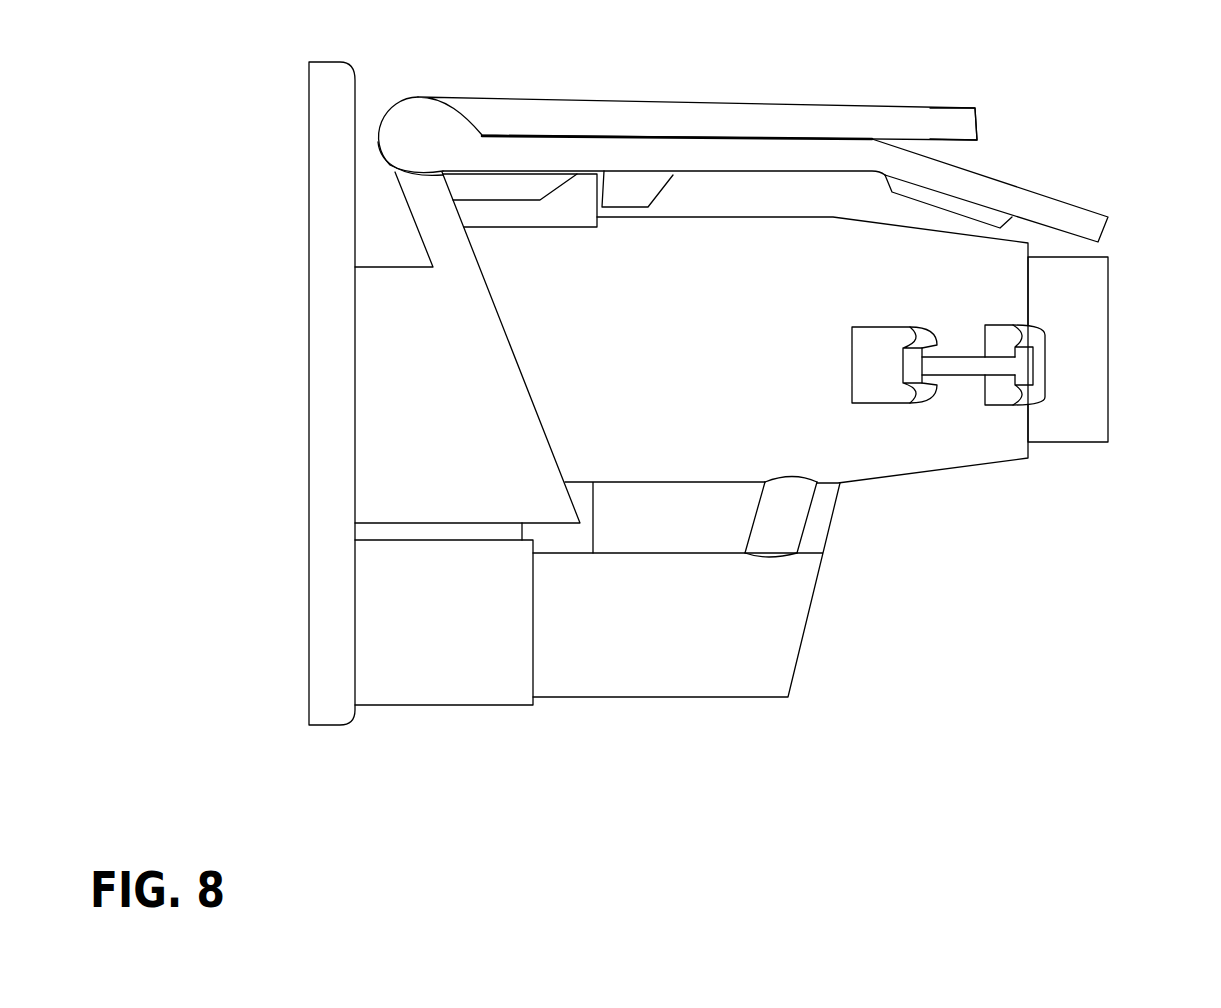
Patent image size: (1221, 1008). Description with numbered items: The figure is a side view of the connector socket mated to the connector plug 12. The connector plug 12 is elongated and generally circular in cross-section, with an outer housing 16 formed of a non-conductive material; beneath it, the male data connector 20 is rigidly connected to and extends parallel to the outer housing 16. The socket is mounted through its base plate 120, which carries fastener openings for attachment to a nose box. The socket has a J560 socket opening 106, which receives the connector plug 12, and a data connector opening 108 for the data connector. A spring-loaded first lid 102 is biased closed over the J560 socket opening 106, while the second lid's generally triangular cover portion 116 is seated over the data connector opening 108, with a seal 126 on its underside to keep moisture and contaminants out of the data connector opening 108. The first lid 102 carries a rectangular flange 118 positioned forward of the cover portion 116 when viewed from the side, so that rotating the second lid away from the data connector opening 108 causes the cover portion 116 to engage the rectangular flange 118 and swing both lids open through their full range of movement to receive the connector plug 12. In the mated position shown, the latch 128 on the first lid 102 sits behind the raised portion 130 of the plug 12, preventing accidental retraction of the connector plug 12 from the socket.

The connector plug 12 is at (835, 437).
The outer housing 16 is at (783, 268).
The male data connector 20 is at (697, 662).
The first lid 102 is at (676, 105).
The J560 socket opening 106 is at (548, 437).
The data connector opening 108 is at (535, 633).
The cover portion 116 is at (1057, 200).
The rectangular flange 118 is at (943, 108).
The base plate 120 is at (307, 578).
The seal 126 is at (1012, 218).
The latch 128 is at (630, 207).
The raised portion 130 is at (562, 213).